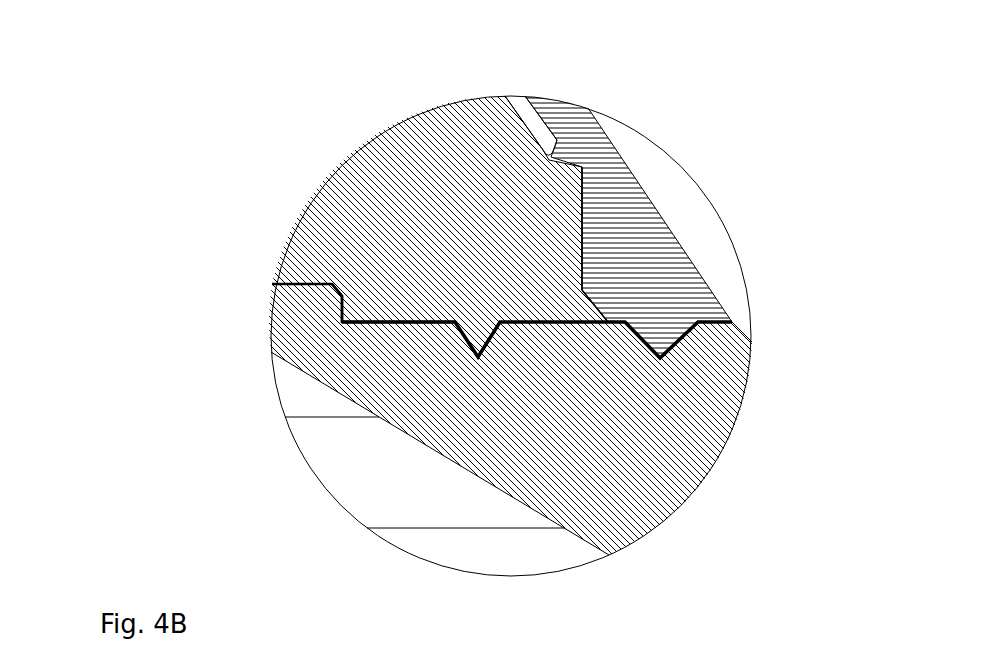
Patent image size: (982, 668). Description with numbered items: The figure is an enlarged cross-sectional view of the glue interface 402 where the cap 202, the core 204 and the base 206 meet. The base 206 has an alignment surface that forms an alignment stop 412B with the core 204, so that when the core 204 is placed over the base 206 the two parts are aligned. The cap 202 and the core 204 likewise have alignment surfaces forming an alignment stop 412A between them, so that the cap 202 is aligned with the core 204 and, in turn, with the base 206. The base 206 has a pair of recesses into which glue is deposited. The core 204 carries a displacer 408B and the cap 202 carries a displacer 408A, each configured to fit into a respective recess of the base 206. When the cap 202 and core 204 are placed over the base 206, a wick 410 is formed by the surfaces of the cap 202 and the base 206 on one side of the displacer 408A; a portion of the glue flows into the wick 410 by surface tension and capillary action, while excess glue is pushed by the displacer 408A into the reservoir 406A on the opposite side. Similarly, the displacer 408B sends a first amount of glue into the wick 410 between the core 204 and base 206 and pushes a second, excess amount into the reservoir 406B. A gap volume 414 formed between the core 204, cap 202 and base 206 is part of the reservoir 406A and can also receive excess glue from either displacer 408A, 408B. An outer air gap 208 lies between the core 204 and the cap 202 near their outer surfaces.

The core 204 is at (388, 145).
The outer air gap 208 is at (540, 138).
The cap 202 is at (635, 212).
The displacer 408B is at (470, 330).
The displacer 408A is at (663, 337).
The gap volume 414 is at (582, 312).
The wick 410 is at (720, 328).
The base 206 is at (640, 430).
The alignment stop 412A is at (580, 223).
The alignment stop 412B is at (336, 313).
The glue interface 402 is at (270, 372).
The reservoir 406B is at (440, 330).
The reservoir 406A is at (628, 340).